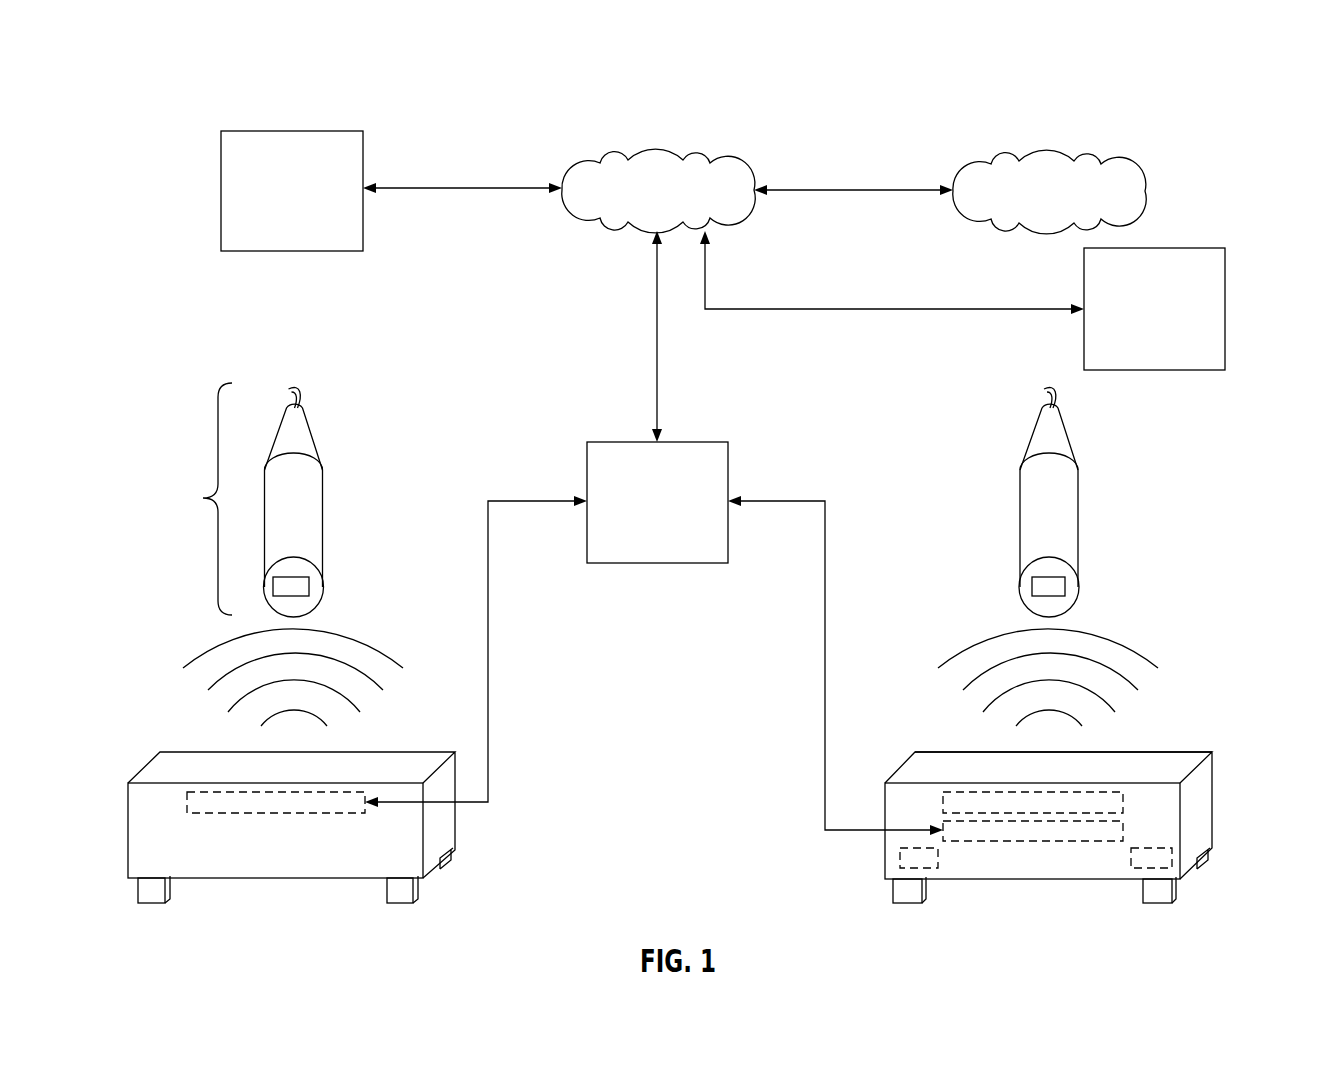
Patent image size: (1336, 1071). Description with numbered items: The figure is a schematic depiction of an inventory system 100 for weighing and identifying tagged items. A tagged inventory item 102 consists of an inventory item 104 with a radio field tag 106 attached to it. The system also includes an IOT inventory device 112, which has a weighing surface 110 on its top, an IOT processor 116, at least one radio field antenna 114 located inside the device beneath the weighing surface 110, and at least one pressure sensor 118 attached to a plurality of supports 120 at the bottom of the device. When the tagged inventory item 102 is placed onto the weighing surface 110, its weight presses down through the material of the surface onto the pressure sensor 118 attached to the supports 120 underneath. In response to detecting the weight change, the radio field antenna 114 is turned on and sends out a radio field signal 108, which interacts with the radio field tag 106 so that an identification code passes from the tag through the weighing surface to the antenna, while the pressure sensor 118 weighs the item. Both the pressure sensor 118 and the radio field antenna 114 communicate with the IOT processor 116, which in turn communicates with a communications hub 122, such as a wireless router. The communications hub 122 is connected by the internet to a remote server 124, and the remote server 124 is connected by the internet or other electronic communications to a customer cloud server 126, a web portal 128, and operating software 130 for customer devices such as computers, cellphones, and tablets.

The inventory system 100 is at (183, 81).
The tagged inventory item 102 is at (1062, 501).
The inventory item 104 is at (1020, 489).
The radio field tag 106 is at (1033, 587).
The radio field signal 108 is at (1188, 627).
The weighing surface 110 is at (1212, 746).
The IOT inventory device 112 is at (1218, 752).
The radio field antenna 114 is at (1128, 792).
The IOT processor 116 is at (1128, 821).
The pressure sensor 118 is at (1125, 848).
The supports 120 is at (1185, 879).
The communications hub 122 is at (637, 515).
The remote server 124 is at (637, 203).
The customer cloud server 126 is at (1029, 204).
The web portal 128 is at (1135, 322).
The operating software 130 is at (272, 203).